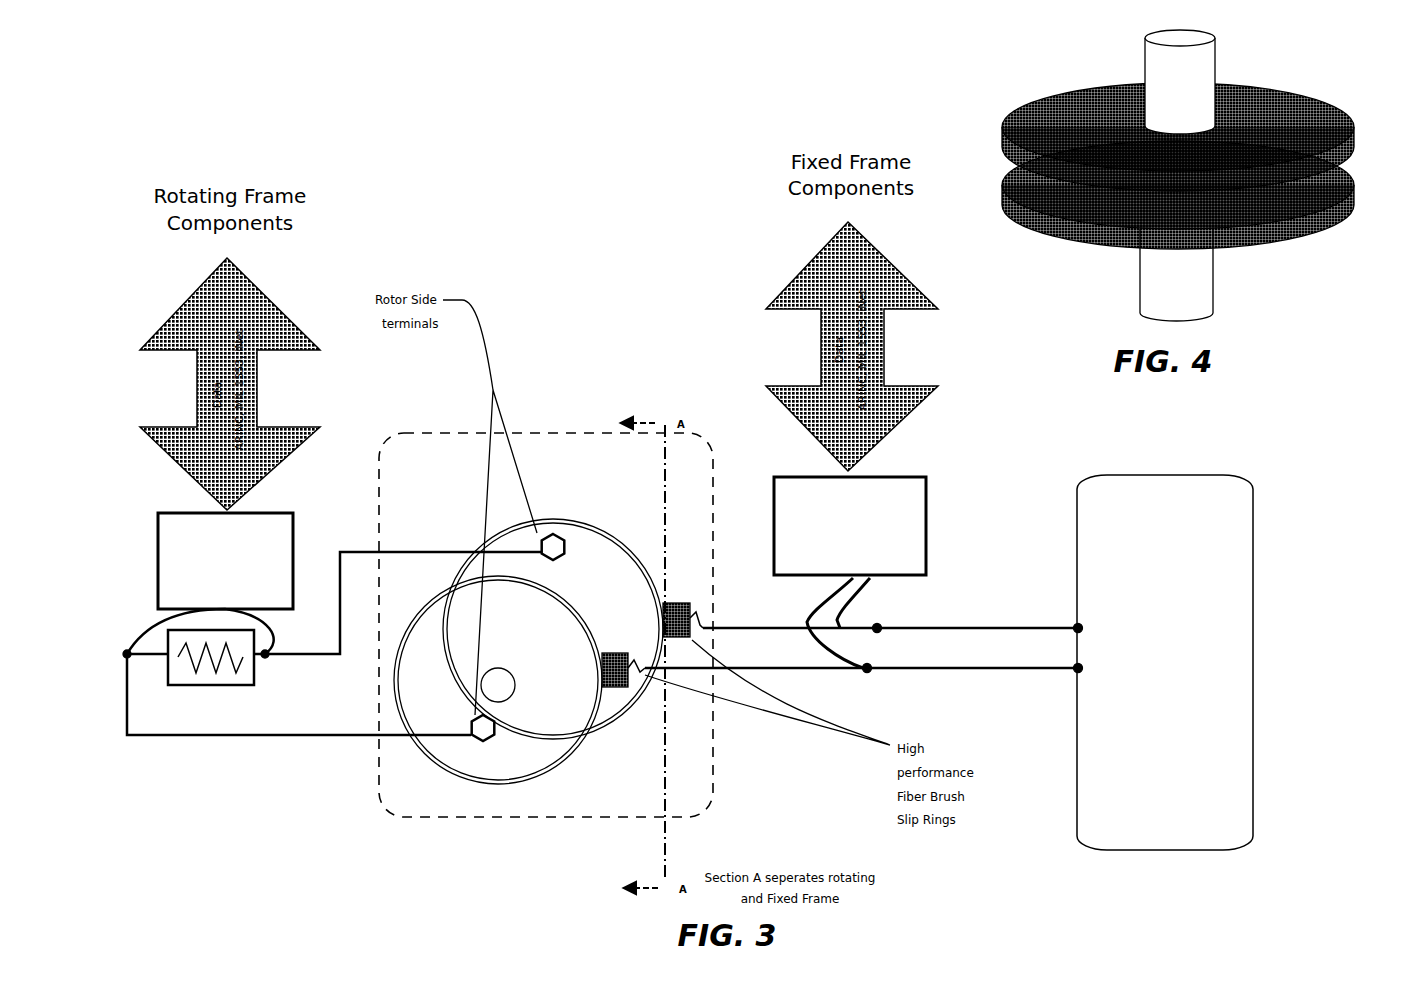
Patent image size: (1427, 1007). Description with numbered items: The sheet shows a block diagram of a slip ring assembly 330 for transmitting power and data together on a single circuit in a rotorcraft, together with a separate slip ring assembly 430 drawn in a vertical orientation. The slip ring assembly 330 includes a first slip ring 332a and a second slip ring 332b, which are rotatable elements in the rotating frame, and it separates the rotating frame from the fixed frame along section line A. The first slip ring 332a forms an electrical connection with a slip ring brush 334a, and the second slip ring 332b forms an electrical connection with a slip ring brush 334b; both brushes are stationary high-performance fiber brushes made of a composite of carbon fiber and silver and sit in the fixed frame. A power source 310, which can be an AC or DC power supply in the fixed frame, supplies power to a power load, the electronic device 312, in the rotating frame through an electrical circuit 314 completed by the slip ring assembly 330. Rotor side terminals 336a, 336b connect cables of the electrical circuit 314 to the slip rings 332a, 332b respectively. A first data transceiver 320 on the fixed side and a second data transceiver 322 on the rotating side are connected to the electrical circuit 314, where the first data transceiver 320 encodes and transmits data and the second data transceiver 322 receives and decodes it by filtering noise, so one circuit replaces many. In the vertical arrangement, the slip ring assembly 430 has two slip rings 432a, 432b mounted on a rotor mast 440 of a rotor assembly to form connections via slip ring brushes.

In FIG. 3, the power source 310 is at (1149, 628).
In FIG. 3, the electronic device 312 is at (200, 690).
In FIG. 3, the electrical circuit 314 is at (357, 552).
In FIG. 3, the first data transceiver 320 is at (834, 538).
In FIG. 3, the second data transceiver 322 is at (209, 579).
In FIG. 3, the slip ring assembly 330 is at (555, 433).
In FIG. 3, the first slip ring 332a is at (588, 519).
In FIG. 3, the second slip ring 332b is at (435, 608).
In FIG. 3, the slip ring brush 334a is at (693, 601).
In FIG. 3, the slip ring brush 334b is at (618, 695).
In FIG. 3, the rotor side terminal 336a is at (540, 544).
In FIG. 3, the rotor side terminal 336b is at (472, 721).
In FIG. 4, the slip ring assembly 430 is at (1362, 81).
In FIG. 4, the slip ring 432a is at (1010, 116).
In FIG. 4, the slip ring 432b is at (1005, 186).
In FIG. 4, the rotor mast 440 is at (1140, 293).